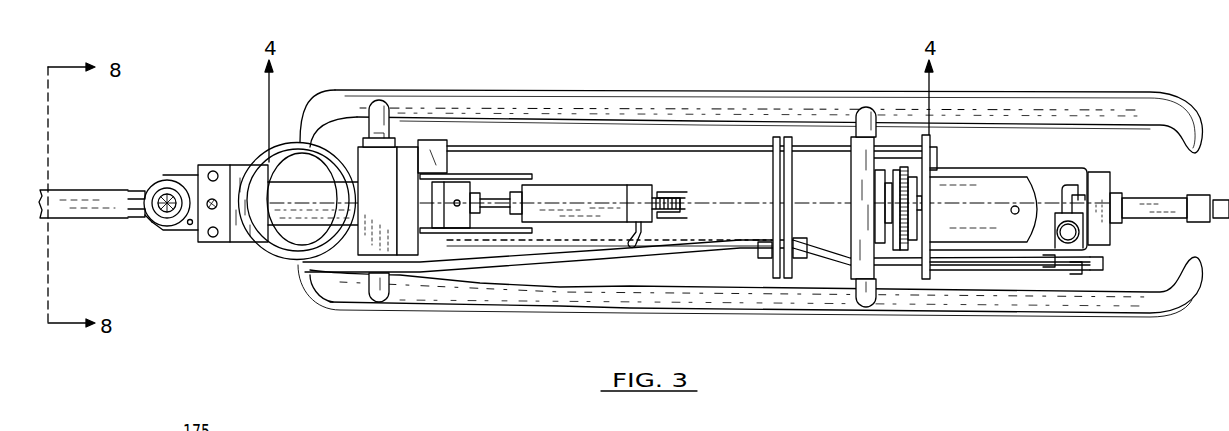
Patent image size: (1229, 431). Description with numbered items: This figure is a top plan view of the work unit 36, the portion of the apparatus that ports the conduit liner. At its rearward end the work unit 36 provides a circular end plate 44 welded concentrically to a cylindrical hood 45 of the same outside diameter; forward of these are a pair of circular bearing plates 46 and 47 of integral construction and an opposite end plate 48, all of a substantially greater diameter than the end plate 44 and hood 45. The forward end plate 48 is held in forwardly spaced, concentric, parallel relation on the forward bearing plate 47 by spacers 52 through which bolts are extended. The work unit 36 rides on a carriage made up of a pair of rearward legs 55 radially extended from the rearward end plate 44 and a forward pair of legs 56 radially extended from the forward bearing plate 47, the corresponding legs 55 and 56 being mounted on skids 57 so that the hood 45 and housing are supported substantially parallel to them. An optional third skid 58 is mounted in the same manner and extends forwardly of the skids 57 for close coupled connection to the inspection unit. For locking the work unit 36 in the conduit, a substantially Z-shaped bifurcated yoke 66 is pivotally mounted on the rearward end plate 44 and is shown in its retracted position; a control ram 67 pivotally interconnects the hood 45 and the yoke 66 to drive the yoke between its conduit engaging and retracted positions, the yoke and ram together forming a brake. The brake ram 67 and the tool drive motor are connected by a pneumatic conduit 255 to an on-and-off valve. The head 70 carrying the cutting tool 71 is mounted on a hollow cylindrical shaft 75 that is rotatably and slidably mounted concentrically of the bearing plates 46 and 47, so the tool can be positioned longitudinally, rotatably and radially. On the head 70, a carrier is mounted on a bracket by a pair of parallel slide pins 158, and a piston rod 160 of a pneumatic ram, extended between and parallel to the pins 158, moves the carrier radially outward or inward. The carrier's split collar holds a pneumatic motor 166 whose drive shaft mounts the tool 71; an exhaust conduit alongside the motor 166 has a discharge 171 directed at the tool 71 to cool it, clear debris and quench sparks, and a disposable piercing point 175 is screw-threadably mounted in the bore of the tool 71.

The work unit 36 is at (750, 192).
The circular end plate 44 is at (366, 166).
The cylindrical hood 45 is at (607, 178).
The rearward bearing plate 46 is at (770, 163).
The forward bearing plate 47 is at (856, 150).
The forward end plate 48 is at (931, 141).
The spacers 52 is at (913, 150).
The rearward legs 55 is at (380, 112).
The forward legs 56 is at (862, 118).
The skids 57 is at (513, 103).
The third skid 58 is at (70, 207).
The Z-shaped bifurcated yoke 66 is at (438, 160).
The control ram 67 is at (600, 194).
The head 70 is at (190, 262).
The cutting tool 71 is at (155, 193).
The hollow cylindrical shaft 75 is at (280, 193).
The slide pins 158 is at (215, 172).
The piston rod 160 is at (217, 205).
The pneumatic motor 166 is at (152, 222).
The discharge 171 is at (189, 225).
The disposable piercing point 175 is at (160, 196).
The pneumatic conduit 255 is at (646, 236).